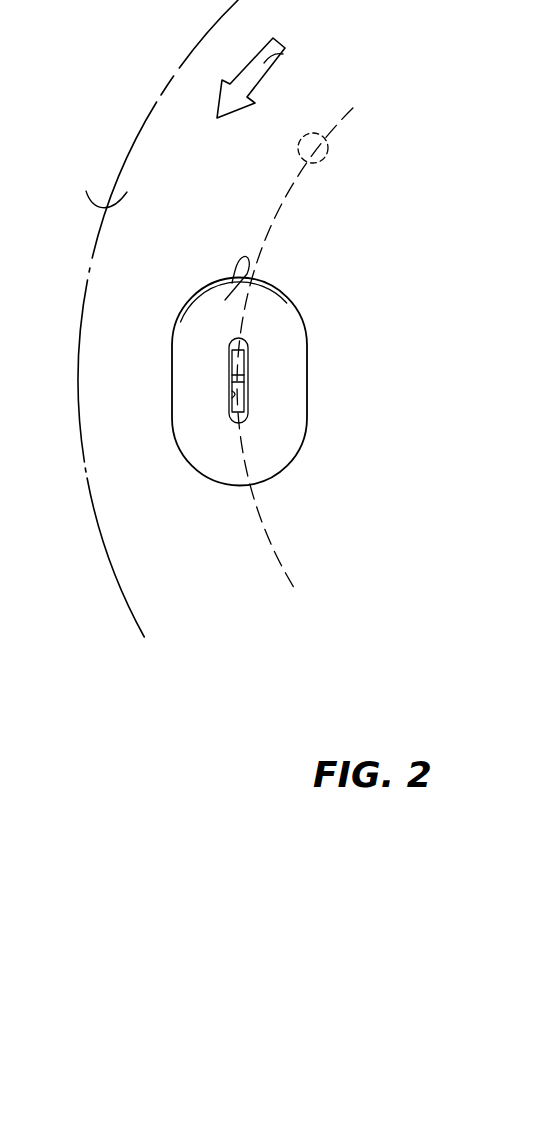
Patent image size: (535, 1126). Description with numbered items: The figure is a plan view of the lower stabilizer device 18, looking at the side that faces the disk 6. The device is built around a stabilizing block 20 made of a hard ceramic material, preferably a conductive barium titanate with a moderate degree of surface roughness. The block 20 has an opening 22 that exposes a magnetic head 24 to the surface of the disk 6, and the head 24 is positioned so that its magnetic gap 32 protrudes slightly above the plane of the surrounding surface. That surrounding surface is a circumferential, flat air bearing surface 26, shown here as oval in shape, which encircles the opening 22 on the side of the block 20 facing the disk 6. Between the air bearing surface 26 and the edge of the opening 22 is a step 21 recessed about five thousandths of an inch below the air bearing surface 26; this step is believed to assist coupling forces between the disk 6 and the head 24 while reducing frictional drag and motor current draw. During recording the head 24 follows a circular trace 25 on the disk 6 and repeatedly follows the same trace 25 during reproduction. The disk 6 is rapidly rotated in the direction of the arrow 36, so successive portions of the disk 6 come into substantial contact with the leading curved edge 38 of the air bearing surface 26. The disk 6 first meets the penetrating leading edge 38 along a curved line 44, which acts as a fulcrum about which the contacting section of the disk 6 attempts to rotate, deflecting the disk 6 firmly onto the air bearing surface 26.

The disk 6 is at (84, 188).
The lower stabilizer device 18 is at (205, 487).
The stabilizing block 20 is at (170, 403).
The step 21 is at (241, 338).
The opening 22 is at (231, 397).
The magnetic head 24 is at (232, 365).
The circular trace 25 is at (331, 150).
The air bearing surface 26 is at (287, 316).
The magnetic gap 32 is at (247, 372).
The arrow 36 is at (286, 45).
The leading curved edge 38 is at (225, 289).
The curved line 44 is at (233, 281).